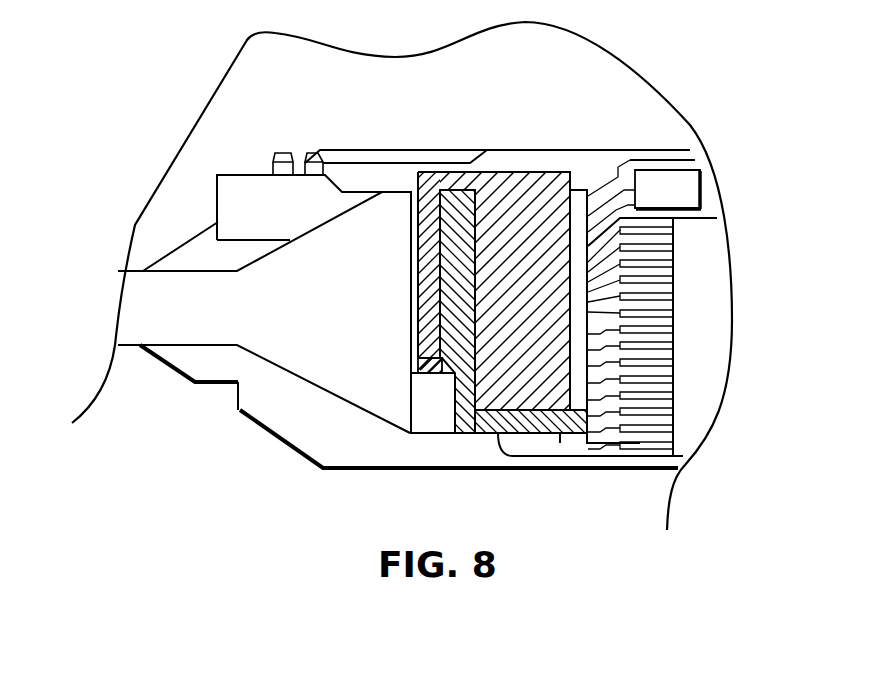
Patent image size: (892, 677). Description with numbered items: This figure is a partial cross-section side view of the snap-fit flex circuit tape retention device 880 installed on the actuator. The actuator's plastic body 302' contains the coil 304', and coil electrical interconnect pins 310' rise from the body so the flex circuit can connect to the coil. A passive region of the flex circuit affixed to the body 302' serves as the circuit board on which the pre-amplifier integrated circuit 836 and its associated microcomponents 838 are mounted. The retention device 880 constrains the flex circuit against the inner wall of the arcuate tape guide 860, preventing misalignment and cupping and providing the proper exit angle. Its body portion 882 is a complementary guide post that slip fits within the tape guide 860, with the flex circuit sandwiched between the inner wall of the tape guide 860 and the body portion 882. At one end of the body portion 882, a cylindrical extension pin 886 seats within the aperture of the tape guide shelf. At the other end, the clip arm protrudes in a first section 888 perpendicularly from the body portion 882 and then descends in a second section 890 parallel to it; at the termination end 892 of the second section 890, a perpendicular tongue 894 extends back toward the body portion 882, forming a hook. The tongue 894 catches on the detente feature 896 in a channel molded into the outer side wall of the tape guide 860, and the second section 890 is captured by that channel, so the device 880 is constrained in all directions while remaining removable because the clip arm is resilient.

The coil 304' is at (366, 321).
The plastic body 302' is at (500, 122).
The coil electrical interconnect pins 310' is at (274, 139).
The pre-amplifier integrated circuit 836 is at (727, 307).
The microcomponents 838 is at (663, 190).
The tape guide 860 is at (448, 302).
The flex circuit tape retention device 880 is at (480, 168).
The body portion 882 is at (517, 207).
The extension pin 886 is at (517, 420).
The first section 888 is at (452, 182).
The second section 890 is at (437, 272).
The termination end 892 is at (452, 358).
The tongue 894 is at (452, 400).
The detente feature 896 is at (440, 352).